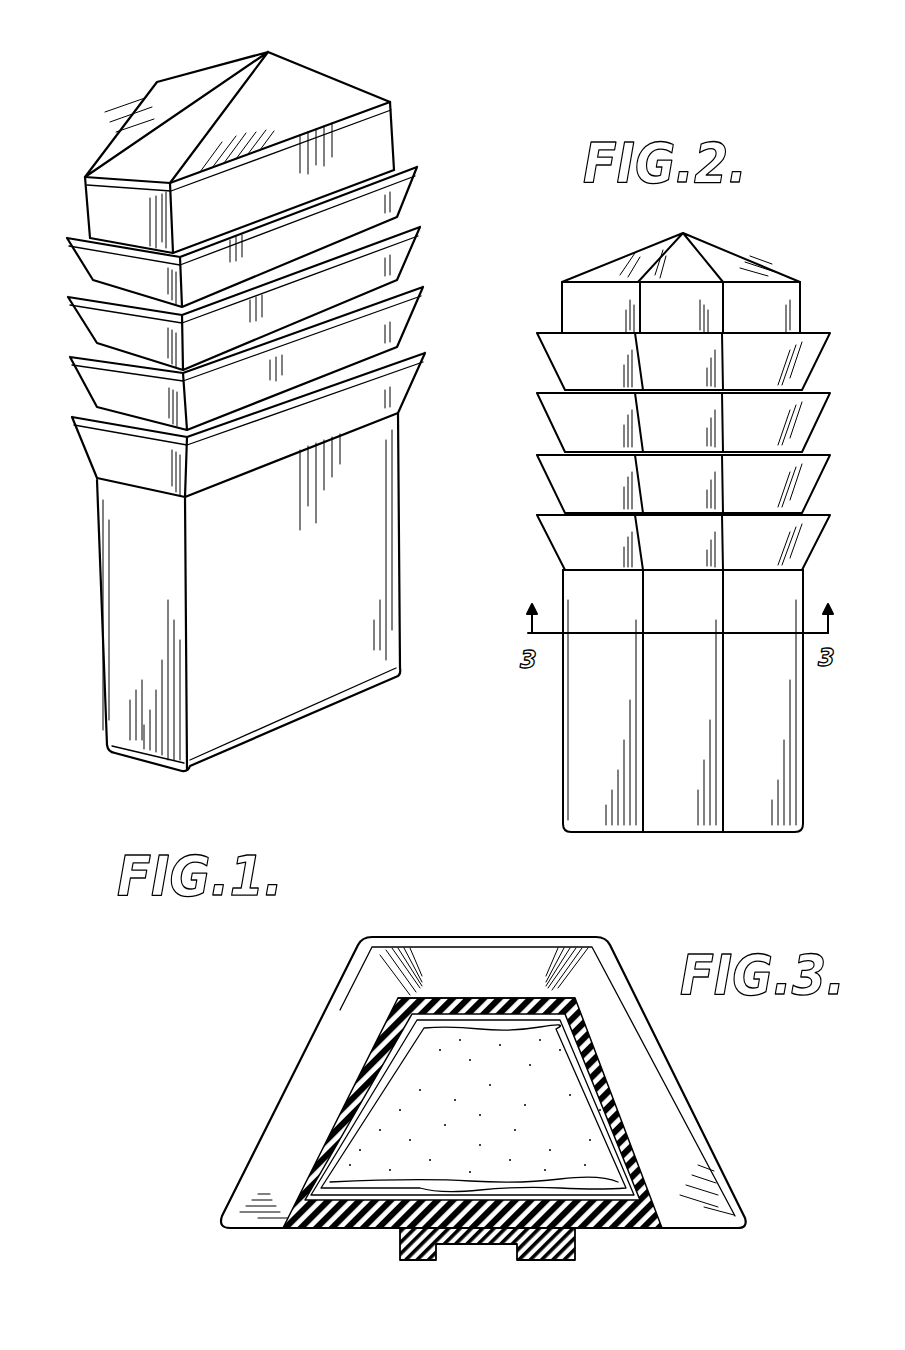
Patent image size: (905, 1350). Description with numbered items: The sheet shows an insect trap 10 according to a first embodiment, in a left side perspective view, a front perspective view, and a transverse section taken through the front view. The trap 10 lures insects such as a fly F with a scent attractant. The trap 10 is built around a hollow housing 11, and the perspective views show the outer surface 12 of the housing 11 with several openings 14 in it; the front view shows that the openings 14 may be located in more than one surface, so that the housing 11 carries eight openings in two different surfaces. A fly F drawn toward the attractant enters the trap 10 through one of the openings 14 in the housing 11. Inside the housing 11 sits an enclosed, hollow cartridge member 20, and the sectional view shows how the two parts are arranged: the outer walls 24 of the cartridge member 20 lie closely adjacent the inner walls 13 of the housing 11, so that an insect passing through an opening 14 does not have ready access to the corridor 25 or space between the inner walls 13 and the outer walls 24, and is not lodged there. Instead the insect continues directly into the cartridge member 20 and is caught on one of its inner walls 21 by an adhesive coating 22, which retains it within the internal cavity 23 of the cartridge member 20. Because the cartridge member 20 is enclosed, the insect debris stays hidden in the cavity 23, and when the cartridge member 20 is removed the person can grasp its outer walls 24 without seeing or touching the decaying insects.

In FIG. 1, the insect trap 10 is at (128, 77).
In FIG. 2, the insect trap 10 is at (693, 551).
In FIG. 1, the housing 11 is at (337, 637).
In FIG. 2, the housing 11 is at (683, 742).
In FIG. 3, the housing 11 is at (603, 1082).
In FIG. 1, the outer surface 12 is at (240, 687).
In FIG. 2, the outer surface 12 is at (743, 805).
In FIG. 3, the inner walls 13 is at (606, 950).
In FIG. 1, the openings 14 is at (425, 353).
In FIG. 2, the openings 14 is at (767, 410).
In FIG. 3, the cartridge member 20 is at (650, 1163).
In FIG. 3, the inner walls 21 is at (617, 1118).
In FIG. 3, the adhesive coating 22 is at (600, 1157).
In FIG. 3, the cavity 23 is at (397, 1167).
In FIG. 3, the outer walls 24 is at (623, 1130).
In FIG. 3, the corridor 25 is at (463, 997).
In FIG. 1, the fly F is at (222, 319).
In FIG. 3, the fly F is at (377, 1133).